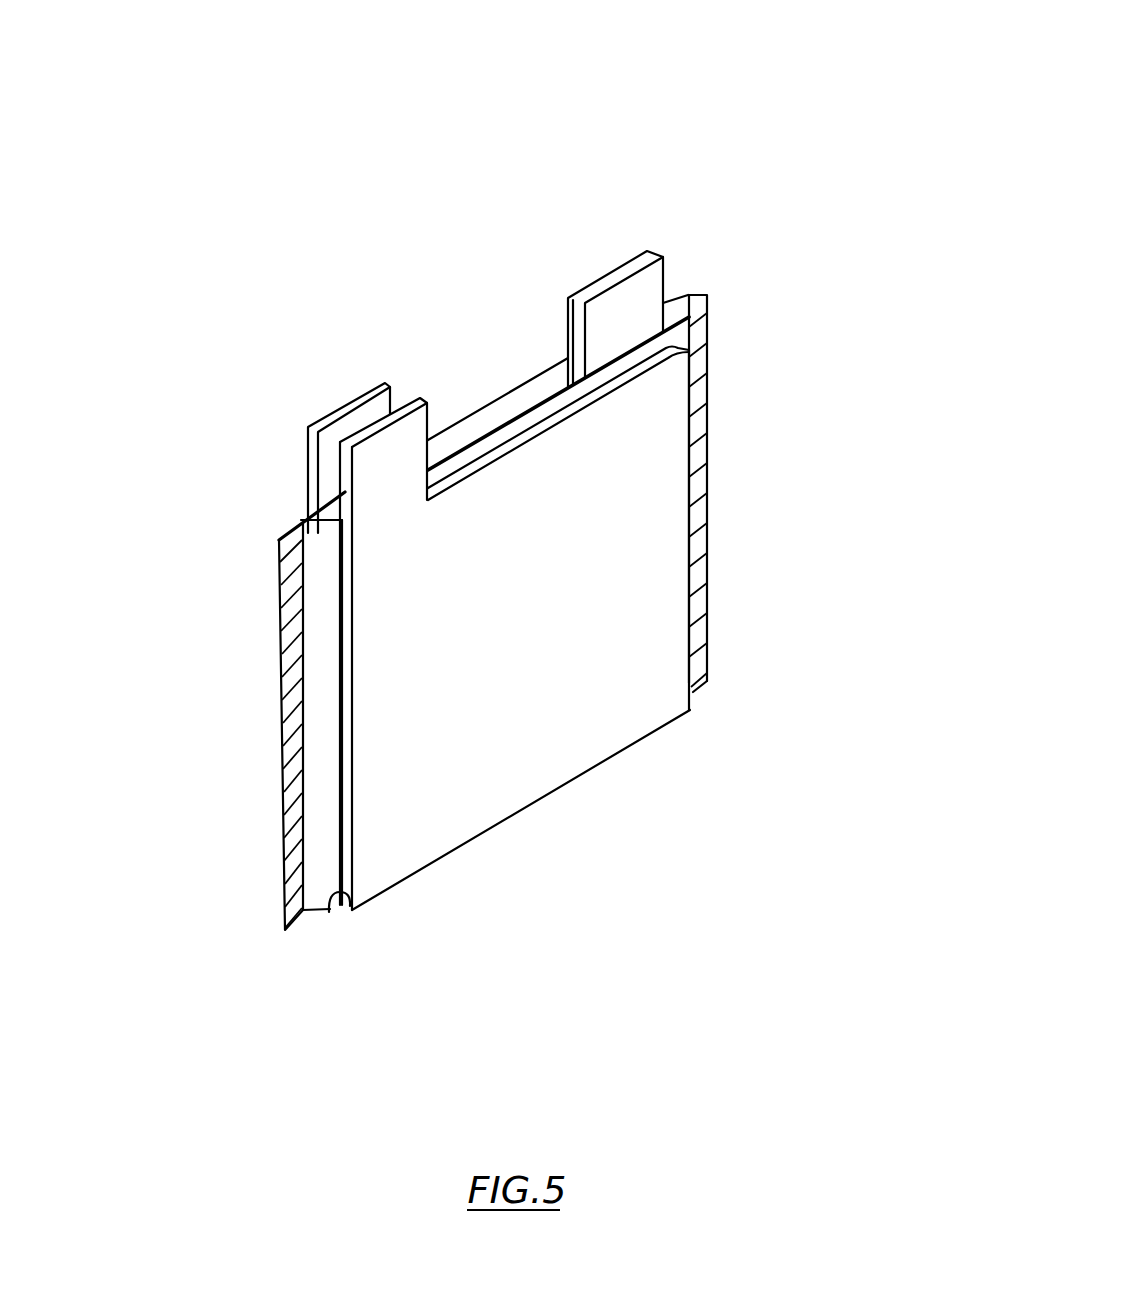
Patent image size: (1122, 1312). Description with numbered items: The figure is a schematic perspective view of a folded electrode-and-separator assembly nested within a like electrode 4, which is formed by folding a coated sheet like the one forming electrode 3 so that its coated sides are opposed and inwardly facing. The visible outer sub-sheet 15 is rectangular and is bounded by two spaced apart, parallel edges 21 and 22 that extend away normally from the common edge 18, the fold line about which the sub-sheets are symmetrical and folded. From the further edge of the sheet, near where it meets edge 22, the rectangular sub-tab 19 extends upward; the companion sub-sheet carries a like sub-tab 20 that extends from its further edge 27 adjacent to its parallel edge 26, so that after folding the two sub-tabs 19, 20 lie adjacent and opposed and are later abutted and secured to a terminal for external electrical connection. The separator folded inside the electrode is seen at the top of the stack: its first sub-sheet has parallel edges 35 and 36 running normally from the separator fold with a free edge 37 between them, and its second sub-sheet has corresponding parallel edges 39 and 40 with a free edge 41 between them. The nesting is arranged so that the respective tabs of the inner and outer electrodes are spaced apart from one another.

The electrode 3 is at (680, 263).
The electrode 4 is at (600, 713).
The sub-sheet 15 is at (494, 619).
The common edge 18 is at (342, 917).
The sub-tab 19 is at (327, 458).
The sub-tab 20 is at (403, 443).
The edge 21 is at (695, 576).
The edge 22 is at (352, 748).
The edge 26 is at (320, 913).
The further edge 27 is at (512, 437).
The edge 35 is at (272, 539).
The edge 36 is at (708, 282).
The free edge 37 is at (322, 500).
The edge 39 is at (267, 572).
The edge 40 is at (722, 313).
The free edge 41 is at (556, 396).